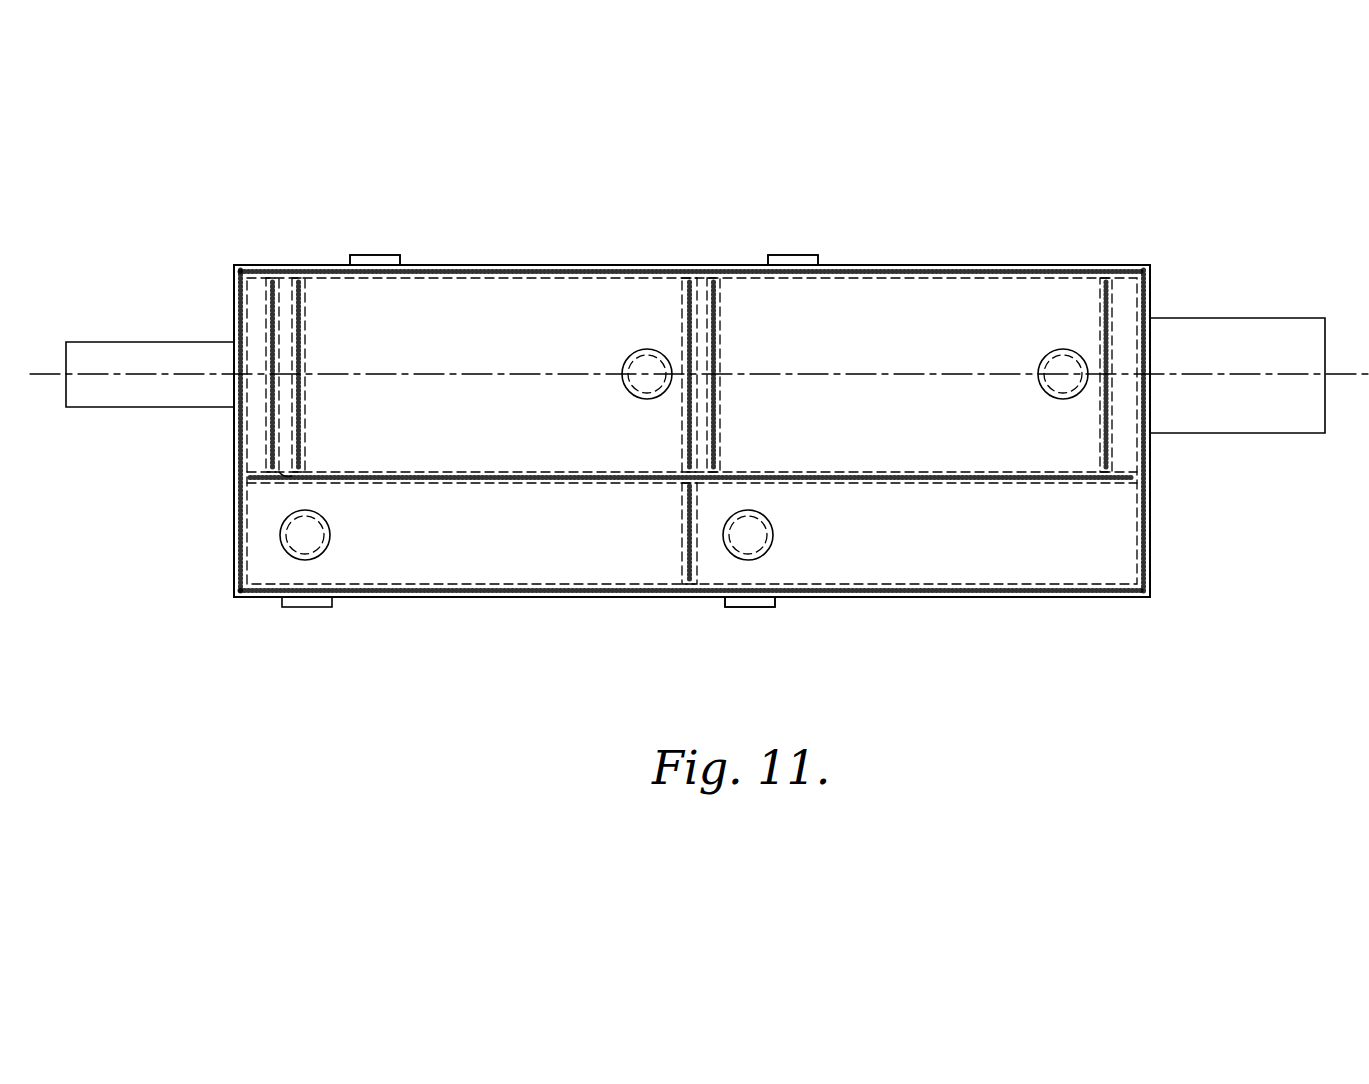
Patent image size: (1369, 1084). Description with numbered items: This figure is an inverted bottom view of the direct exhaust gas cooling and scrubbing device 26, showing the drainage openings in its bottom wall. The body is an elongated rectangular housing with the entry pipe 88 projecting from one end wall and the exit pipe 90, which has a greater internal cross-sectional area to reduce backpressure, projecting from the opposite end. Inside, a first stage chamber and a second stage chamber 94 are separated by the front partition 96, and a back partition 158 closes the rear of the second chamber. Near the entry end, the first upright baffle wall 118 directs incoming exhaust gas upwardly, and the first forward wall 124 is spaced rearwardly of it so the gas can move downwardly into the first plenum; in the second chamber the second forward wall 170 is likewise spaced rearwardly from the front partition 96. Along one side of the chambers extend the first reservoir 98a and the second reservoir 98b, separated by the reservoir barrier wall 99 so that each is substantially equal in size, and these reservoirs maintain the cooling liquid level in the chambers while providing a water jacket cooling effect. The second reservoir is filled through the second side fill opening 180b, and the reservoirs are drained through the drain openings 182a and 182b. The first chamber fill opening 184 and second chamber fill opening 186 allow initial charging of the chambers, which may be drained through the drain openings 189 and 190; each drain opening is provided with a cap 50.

The direct exhaust gas cooling and scrubbing device 26 is at (1032, 245).
The caps 50 is at (368, 262).
The entry pipe 88 is at (107, 348).
The exit pipe 90 is at (1207, 438).
The second stage chamber 94 is at (862, 262).
The partition 96 is at (683, 447).
The first reservoir 98a is at (538, 572).
The second reservoir 98b is at (1012, 572).
The reservoir barrier wall 99 is at (683, 568).
The first upright baffle wall 118 is at (290, 470).
The first forward wall 124 is at (303, 437).
The back partition 158 is at (1100, 455).
The second forward wall 170 is at (720, 447).
The second side fill opening 180b is at (758, 596).
The drain opening 182a is at (312, 546).
The drain opening 182b is at (755, 522).
The first chamber fill opening 184 is at (372, 280).
The second chamber fill opening 186 is at (792, 280).
The drain opening 189 is at (640, 383).
The drain opening 190 is at (1055, 386).